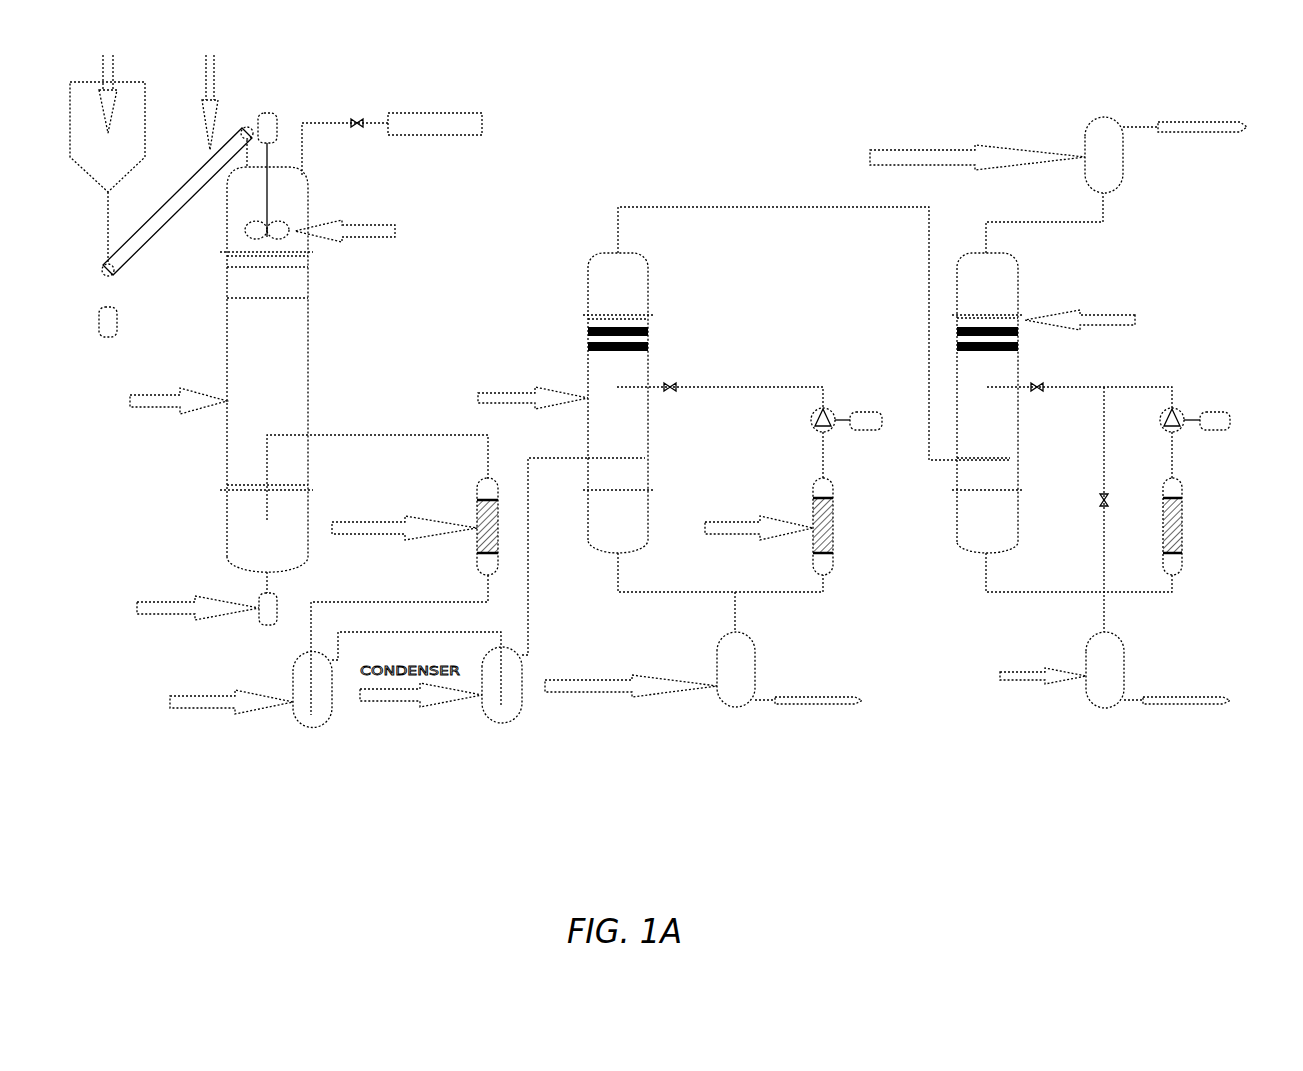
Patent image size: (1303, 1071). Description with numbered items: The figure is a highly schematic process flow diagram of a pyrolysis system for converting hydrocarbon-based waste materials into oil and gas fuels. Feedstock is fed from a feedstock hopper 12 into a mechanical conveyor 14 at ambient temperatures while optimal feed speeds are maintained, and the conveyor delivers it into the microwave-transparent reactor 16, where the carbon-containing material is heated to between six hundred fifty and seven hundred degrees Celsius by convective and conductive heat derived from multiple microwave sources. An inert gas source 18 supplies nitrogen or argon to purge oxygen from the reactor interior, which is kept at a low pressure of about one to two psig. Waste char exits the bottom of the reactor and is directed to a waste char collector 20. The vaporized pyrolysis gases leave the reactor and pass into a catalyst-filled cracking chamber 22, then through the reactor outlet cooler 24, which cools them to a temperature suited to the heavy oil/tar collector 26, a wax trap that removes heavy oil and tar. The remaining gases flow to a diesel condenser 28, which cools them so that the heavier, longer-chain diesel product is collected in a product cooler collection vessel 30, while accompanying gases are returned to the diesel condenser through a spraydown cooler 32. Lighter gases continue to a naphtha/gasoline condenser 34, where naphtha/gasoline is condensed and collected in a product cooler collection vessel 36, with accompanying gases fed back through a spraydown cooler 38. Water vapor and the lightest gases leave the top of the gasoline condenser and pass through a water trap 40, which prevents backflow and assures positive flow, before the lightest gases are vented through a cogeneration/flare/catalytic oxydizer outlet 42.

The feedstock hopper 12 is at (92, 147).
The mechanical conveyor 14 is at (167, 228).
The microwave-transparent reactor 16 is at (275, 345).
The inert gas source 18 is at (437, 112).
The waste char collector 20 is at (259, 620).
The catalyst-filled cracking chamber 22 is at (375, 435).
The reactor outlet cooler 24 is at (477, 540).
The heavy oil/tar collector 26 is at (293, 713).
The diesel condenser 28 is at (610, 295).
The product cooler collection vessel 30 is at (730, 690).
The spraydown cooler 32 is at (833, 540).
The naphtha/gasoline condenser 34 is at (990, 280).
The product cooler collection vessel 36 is at (1100, 690).
The spraydown cooler 38 is at (1182, 520).
The water trap 40 is at (1085, 147).
The cogeneration/flare/catalytic oxydizer outlet 42 is at (1192, 133).